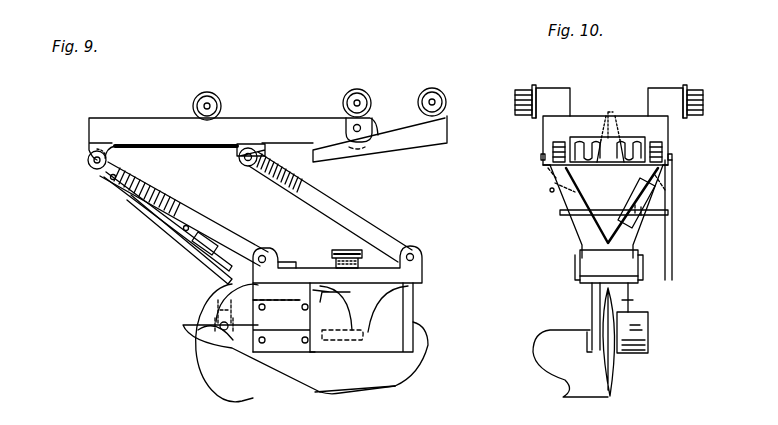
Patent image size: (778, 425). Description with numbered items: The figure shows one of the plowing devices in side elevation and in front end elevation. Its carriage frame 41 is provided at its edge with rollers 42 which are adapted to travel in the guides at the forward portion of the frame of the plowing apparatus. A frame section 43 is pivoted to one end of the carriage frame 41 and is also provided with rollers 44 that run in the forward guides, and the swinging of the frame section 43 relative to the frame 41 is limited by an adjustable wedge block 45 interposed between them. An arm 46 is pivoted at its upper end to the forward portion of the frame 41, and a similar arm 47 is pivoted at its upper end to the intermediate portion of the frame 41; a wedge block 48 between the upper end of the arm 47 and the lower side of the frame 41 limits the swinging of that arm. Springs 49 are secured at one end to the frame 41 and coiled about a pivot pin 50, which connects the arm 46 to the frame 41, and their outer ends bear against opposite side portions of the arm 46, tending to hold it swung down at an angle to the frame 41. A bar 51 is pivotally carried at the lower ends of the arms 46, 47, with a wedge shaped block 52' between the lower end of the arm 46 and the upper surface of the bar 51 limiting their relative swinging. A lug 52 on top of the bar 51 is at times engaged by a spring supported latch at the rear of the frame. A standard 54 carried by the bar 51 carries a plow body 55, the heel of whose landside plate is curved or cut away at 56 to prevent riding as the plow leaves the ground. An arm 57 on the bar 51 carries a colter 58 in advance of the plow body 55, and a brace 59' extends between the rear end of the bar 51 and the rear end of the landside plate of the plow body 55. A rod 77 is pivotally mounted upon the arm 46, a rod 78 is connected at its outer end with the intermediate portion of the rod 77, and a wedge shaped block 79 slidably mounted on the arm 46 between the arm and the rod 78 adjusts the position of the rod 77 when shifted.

In FIG. 9, the carriage frame 41 is at (243, 127).
In FIG. 10, the carriage frame 41 is at (580, 121).
In FIG. 9, the rollers 42 is at (357, 89).
In FIG. 10, the rollers 42 is at (523, 93).
In FIG. 9, the frame section 43 is at (388, 150).
In FIG. 9, the rollers 44 is at (438, 89).
In FIG. 9, the wedge block 45 is at (313, 148).
In FIG. 9, the arm 46 is at (152, 200).
In FIG. 10, the arm 46 is at (572, 195).
In FIG. 9, the arm 47 is at (300, 193).
In FIG. 9, the wedge block 48 is at (205, 148).
In FIG. 10, the springs 49 is at (664, 152).
In FIG. 9, the pivot pin 50 is at (87, 162).
In FIG. 10, the pivot pin 50 is at (529, 173).
In FIG. 9, the bar 51 is at (372, 276).
In FIG. 10, the bar 51 is at (590, 278).
In FIG. 9, the lug 52 is at (360, 234).
In FIG. 9, the wedge shaped block 52' is at (290, 252).
In FIG. 9, the standard 54 is at (362, 320).
In FIG. 10, the standard 54 is at (640, 290).
In FIG. 9, the plow body 55 is at (303, 385).
In FIG. 10, the plow body 55 is at (565, 358).
In FIG. 9, the curved or cut away heel portion 56 is at (394, 386).
In FIG. 9, the arm 57 is at (218, 310).
In FIG. 10, the arm 57 is at (596, 305).
In FIG. 9, the colter 58 is at (178, 345).
In FIG. 10, the colter 58 is at (616, 368).
In FIG. 9, the brace 59' is at (436, 353).
In FIG. 9, the rod 77 is at (198, 258).
In FIG. 10, the rod 77 is at (673, 250).
In FIG. 9, the rod 78 is at (170, 228).
In FIG. 10, the rod 78 is at (660, 215).
In FIG. 9, the wedge shaped block 79 is at (198, 230).
In FIG. 10, the wedge shaped block 79 is at (633, 212).